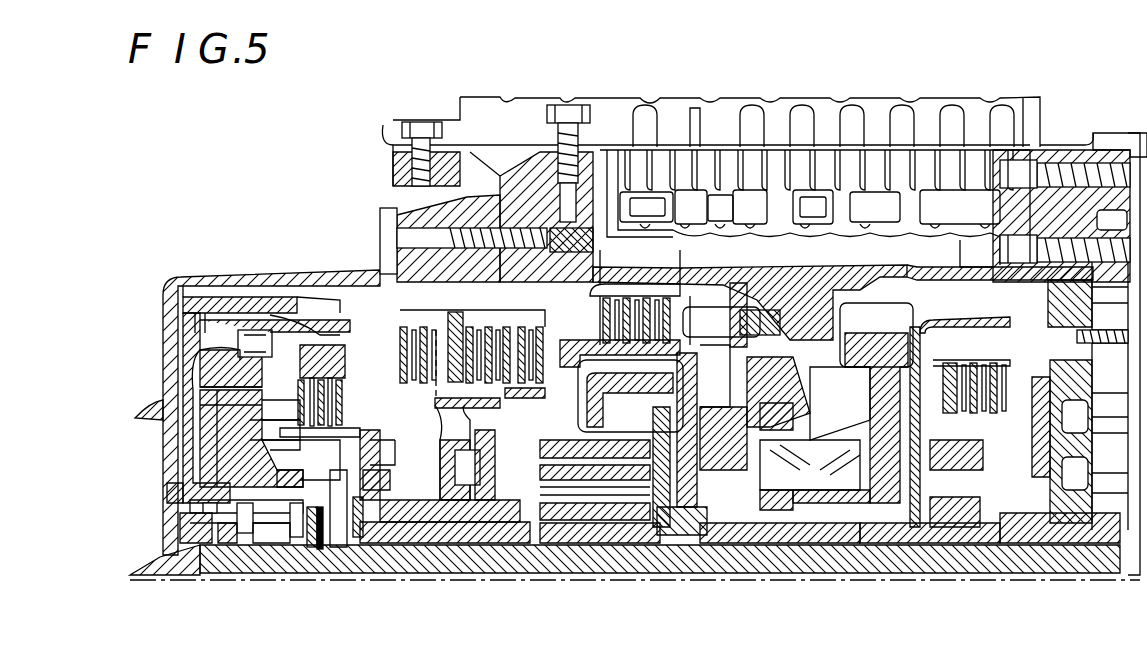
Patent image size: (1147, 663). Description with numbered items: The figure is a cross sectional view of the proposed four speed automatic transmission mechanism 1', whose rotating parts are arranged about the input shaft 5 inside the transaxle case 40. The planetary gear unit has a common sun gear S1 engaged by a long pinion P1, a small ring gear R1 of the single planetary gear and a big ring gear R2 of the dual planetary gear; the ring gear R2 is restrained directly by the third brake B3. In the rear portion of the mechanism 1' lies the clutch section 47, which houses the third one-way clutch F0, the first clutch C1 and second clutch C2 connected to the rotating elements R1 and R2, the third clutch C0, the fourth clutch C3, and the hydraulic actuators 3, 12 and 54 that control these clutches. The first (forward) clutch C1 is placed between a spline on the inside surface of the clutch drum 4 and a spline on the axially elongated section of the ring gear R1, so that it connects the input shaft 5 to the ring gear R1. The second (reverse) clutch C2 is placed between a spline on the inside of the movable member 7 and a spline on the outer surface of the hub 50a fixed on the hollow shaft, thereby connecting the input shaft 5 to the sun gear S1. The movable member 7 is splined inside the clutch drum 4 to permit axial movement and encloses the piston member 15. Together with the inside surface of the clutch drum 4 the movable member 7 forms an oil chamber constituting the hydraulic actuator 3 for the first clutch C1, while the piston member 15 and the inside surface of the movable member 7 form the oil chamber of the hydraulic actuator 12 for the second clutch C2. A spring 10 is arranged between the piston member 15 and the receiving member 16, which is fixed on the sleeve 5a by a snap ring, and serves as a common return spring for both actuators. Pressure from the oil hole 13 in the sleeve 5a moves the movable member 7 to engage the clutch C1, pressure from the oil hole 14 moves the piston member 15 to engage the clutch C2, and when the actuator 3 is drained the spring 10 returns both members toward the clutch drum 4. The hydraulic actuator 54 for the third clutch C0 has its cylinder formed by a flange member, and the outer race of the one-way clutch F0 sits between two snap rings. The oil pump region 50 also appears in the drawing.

The automatic transmission mechanism 1' is at (638, 340).
The hydraulic actuator 3 is at (213, 440).
The clutch drum 4 is at (203, 407).
The input shaft 5 is at (690, 560).
The sleeve 5a is at (200, 510).
The movable member 7 is at (205, 403).
The spring 10 is at (320, 480).
The hydraulic actuator 12 is at (215, 460).
The oil hole 13 is at (240, 537).
The oil hole 14 is at (282, 515).
The piston member 15 is at (270, 537).
The receiving member 16 is at (333, 497).
The transaxle case 40 is at (588, 195).
The clutch section 47 is at (356, 254).
The oil pump 50 is at (430, 537).
The hub 50a is at (390, 465).
The hydraulic actuator 54 is at (220, 300).
The third clutch C0 is at (530, 325).
The first clutch C1 is at (403, 322).
The second clutch C2 is at (340, 373).
The fourth clutch C3 is at (478, 325).
The third one-way clutch F0 is at (454, 443).
The ring gear R1 is at (557, 408).
The ring gear R2 is at (593, 288).
The third brake B3 is at (647, 293).
The long pinion P1 is at (550, 517).
The sun gear S1 is at (573, 527).